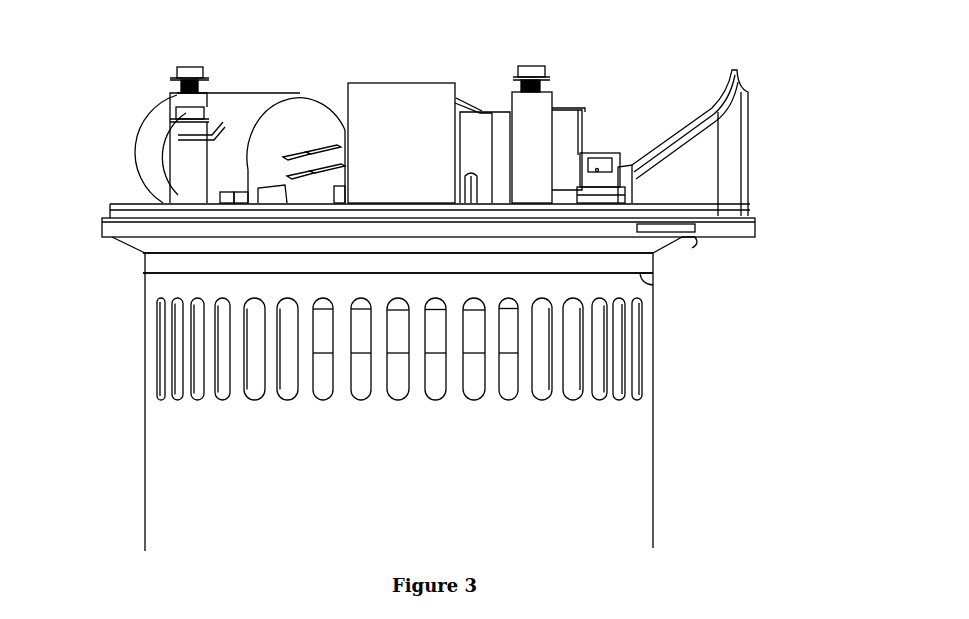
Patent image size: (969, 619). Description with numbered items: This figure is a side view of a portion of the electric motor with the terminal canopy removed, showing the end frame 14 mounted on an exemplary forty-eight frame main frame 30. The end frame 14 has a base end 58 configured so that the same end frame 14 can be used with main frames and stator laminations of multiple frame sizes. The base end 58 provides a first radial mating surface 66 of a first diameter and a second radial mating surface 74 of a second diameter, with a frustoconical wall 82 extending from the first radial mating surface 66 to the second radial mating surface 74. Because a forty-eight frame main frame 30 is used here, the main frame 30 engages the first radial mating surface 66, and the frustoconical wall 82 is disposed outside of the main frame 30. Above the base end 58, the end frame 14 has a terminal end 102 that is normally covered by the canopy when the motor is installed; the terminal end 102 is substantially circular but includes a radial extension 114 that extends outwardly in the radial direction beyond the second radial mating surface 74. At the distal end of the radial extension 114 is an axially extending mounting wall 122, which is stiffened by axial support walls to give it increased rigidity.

The end frame 14 is at (102, 228).
The main frame 30 is at (627, 441).
The base end 58 is at (178, 275).
The first radial mating surface 66 is at (653, 285).
The second radial mating surface 74 is at (690, 250).
The frustoconical wall 82 is at (135, 250).
The terminal end 102 is at (148, 203).
The radial extension 114 is at (750, 222).
The mounting wall 122 is at (748, 112).